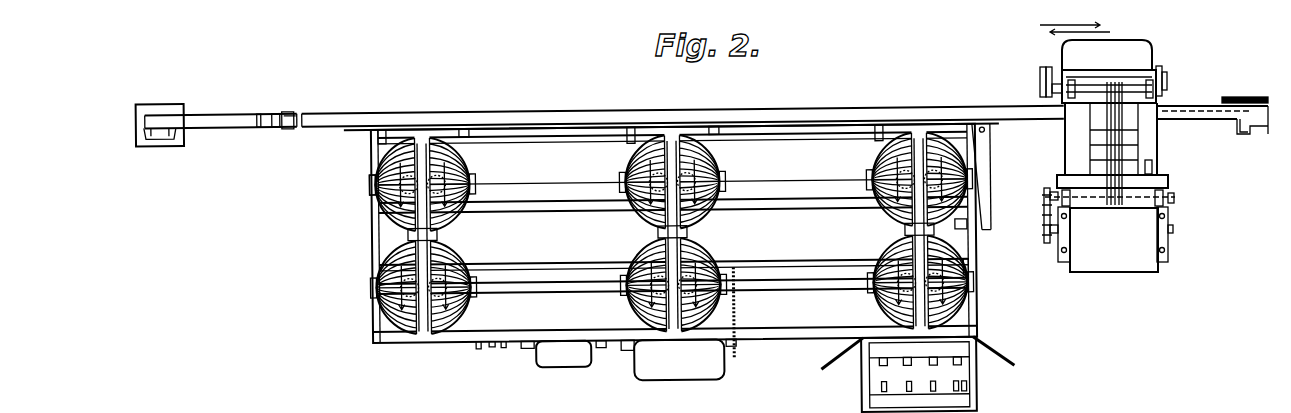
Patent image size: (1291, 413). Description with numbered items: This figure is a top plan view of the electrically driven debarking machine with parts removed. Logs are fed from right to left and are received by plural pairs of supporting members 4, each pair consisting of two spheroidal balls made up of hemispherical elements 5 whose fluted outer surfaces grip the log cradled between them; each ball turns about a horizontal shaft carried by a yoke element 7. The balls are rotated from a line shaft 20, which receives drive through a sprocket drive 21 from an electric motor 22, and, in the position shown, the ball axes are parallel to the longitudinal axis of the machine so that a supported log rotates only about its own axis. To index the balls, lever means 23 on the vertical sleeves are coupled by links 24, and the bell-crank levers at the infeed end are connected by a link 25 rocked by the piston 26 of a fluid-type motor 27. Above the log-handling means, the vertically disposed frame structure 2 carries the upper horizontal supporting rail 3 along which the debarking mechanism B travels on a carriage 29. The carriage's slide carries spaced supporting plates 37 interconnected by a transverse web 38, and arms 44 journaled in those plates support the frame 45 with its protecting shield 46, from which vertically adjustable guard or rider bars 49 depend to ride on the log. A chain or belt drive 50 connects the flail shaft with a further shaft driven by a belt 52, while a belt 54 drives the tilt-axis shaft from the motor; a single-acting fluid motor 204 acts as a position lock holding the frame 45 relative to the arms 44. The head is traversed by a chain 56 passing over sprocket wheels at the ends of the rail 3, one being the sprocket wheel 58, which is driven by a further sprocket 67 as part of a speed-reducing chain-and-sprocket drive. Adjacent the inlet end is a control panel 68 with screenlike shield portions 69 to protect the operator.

The second frame structure 2 is at (1246, 134).
The upper horizontal supporting rail 3 is at (1192, 112).
The supporting members 4 is at (471, 165).
The hemispherical elements 5 is at (983, 303).
The yoke element 7 is at (370, 182).
The line shaft 20 is at (531, 285).
The sprocket drive 21 is at (736, 283).
The electric motor 22 is at (715, 368).
The lever means 23 is at (466, 190).
The links 24 is at (545, 206).
The link 25 is at (968, 230).
The piston 26 is at (970, 242).
The fluid-type motor 27 is at (989, 176).
The carriage 29 is at (1097, 131).
The supporting plates 37 is at (1163, 80).
The transverse web 38 is at (1118, 70).
The arms 44 is at (1155, 172).
The frame 45 is at (1175, 251).
The protecting shield 46 is at (1150, 260).
The guard or rider bars 49 is at (1060, 235).
The chain or belt drive 50 is at (1044, 212).
The belt 52 is at (1108, 148).
The belt 54 is at (1040, 80).
The chain 56 is at (1190, 106).
The sprocket wheel 58 is at (1232, 116).
The sprocket 67 is at (1240, 98).
The control panel 68 is at (983, 403).
The screenlike shield portions 69 is at (1003, 364).
The single-acting fluid motor 204 is at (1150, 160).
The debarking mechanism B is at (1158, 53).